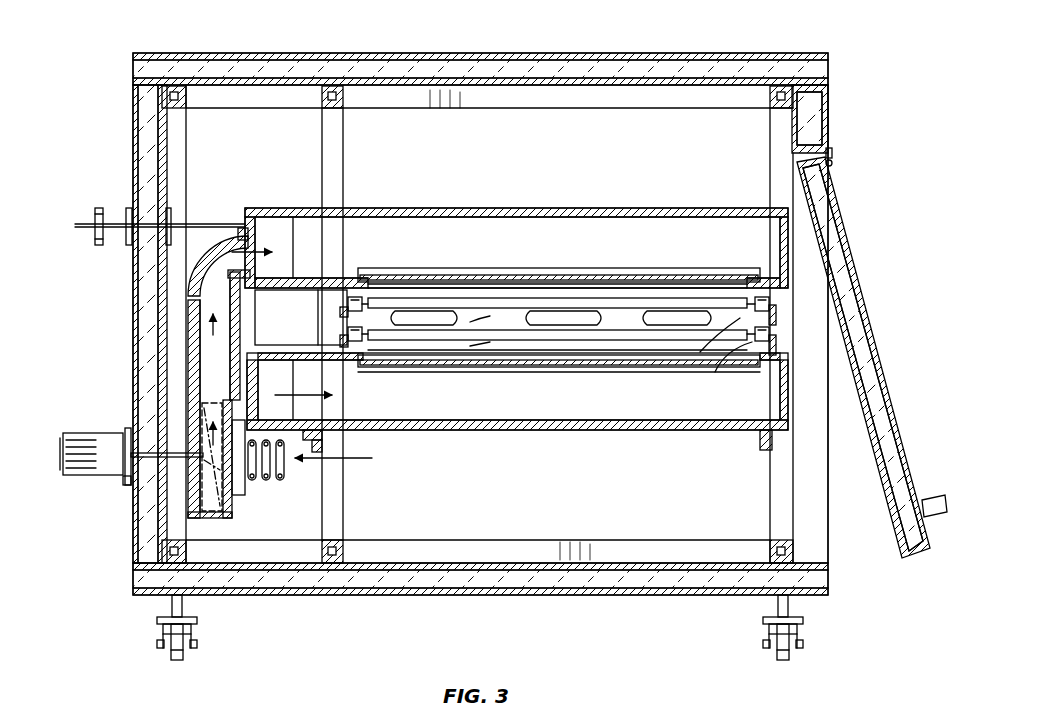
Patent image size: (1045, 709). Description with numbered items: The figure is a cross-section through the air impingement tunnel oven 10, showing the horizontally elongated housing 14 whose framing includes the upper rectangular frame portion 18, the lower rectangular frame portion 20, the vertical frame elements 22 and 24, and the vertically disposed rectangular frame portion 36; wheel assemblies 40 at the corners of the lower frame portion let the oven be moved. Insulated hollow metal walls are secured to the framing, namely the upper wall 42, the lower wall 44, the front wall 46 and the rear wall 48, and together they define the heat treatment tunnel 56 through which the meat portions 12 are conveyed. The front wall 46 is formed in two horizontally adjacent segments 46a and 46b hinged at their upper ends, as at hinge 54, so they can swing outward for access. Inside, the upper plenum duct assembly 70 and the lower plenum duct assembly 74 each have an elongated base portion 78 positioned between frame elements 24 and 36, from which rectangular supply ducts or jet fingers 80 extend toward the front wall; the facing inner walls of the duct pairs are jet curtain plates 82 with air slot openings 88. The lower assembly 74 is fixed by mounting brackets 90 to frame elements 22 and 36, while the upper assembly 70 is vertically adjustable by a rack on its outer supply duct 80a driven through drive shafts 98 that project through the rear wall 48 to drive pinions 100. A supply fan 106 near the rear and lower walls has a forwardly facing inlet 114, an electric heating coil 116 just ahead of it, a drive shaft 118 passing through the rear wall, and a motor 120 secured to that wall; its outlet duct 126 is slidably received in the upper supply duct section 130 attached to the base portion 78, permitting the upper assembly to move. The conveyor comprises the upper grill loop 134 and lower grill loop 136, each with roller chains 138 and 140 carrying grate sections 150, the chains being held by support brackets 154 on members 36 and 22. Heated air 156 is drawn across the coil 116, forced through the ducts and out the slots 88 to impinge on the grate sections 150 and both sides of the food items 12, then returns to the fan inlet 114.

The air impingement tunnel oven 10 is at (856, 47).
The meat portions 12 is at (412, 280).
The housing 14 is at (133, 52).
The upper rectangular frame portion 18 is at (632, 88).
The lower rectangular frame portion 20 is at (596, 555).
The vertically extending frame element 22 is at (768, 140).
The vertically extending frame element 24 is at (188, 165).
The vertically disposed rectangular frame portion 36 is at (344, 142).
The wheel assemblies 40 is at (177, 662).
The upper wall 42 is at (380, 52).
The lower wall 44 is at (442, 596).
The front wall 46 is at (879, 357).
The front wall segment 46a is at (905, 448).
The front wall segment 46b is at (822, 532).
The rear wall 48 is at (137, 300).
The hinge 54 is at (834, 152).
The heat treatment passage or tunnel 56 is at (510, 140).
The upper plenum duct assembly 70 is at (539, 293).
The lower plenum duct assembly 74 is at (517, 416).
The base portion 78 is at (297, 205).
The supply ducts or jet fingers 80 is at (628, 432).
The horizontally outer supply duct 80a is at (668, 208).
The jet curtain plates 82 is at (480, 262).
The air slot openings 88 is at (618, 272).
The mounting brackets 90 is at (330, 446).
The drive shafts 98 is at (196, 225).
The drive pinions 100 is at (99, 208).
The supply fan 106 is at (208, 522).
The inlet 114 is at (240, 485).
The electric heating coil 116 is at (278, 482).
The drive shaft 118 is at (156, 468).
The motor 120 is at (110, 432).
The outlet duct 126 is at (185, 380).
The upper supply duct section 130 is at (186, 325).
The upper grill loop 134 is at (770, 302).
The lower grill loop 136 is at (770, 334).
The roller chain 138 is at (730, 368).
The roller chain 140 is at (347, 297).
The grate sections 150 is at (472, 322).
The support brackets 154 is at (340, 312).
The heated cooking air 156 is at (250, 252).